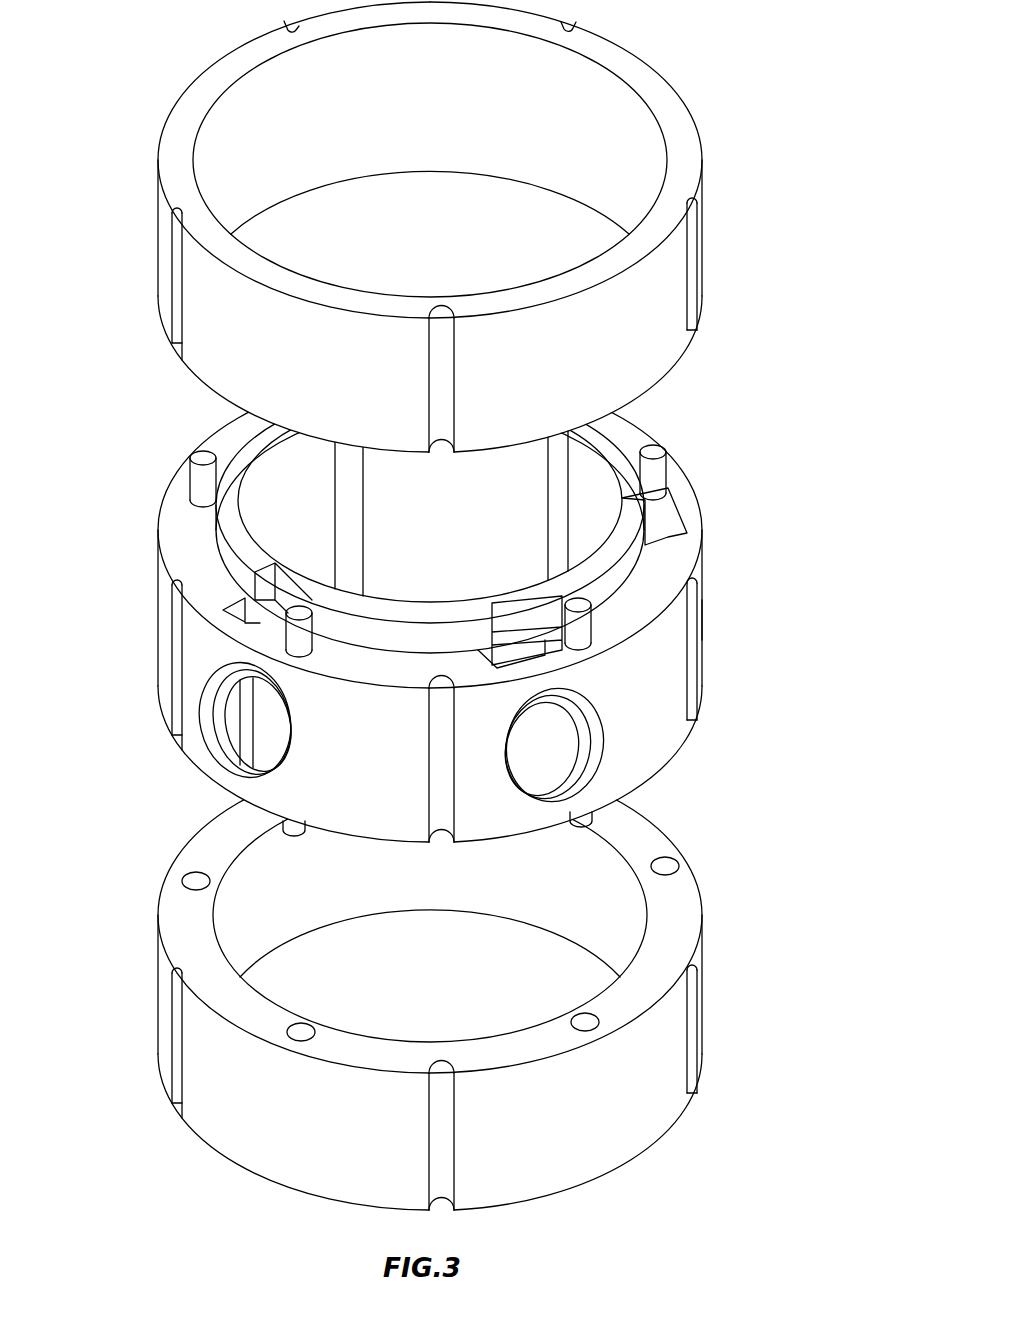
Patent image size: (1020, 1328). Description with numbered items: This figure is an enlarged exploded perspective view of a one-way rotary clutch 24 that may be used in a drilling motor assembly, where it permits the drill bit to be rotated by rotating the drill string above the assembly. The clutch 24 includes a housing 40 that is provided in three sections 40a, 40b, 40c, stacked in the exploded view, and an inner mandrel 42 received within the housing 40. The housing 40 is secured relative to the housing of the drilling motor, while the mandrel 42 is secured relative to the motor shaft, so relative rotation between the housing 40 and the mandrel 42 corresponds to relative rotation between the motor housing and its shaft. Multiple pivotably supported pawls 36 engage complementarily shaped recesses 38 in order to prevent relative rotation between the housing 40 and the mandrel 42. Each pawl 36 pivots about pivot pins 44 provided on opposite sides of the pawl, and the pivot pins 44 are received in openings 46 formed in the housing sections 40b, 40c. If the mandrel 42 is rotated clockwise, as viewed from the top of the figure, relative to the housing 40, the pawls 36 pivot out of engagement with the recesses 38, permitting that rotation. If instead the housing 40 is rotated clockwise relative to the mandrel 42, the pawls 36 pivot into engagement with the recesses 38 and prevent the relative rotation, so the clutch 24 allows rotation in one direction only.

The one-way rotary clutch 24 is at (752, 90).
The pawls 36 is at (243, 616).
The recesses 38 is at (560, 490).
The housing 40 is at (705, 643).
The housing section 40a is at (200, 770).
The housing section 40b is at (157, 228).
The housing section 40c is at (210, 1150).
The inner mandrel 42 is at (622, 430).
The pivot pins 44 is at (190, 478).
The openings 46 is at (182, 881).